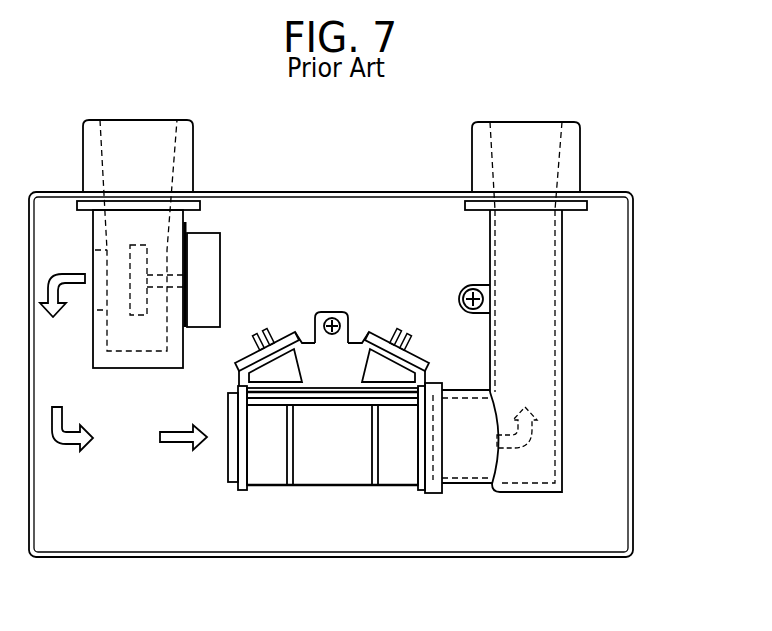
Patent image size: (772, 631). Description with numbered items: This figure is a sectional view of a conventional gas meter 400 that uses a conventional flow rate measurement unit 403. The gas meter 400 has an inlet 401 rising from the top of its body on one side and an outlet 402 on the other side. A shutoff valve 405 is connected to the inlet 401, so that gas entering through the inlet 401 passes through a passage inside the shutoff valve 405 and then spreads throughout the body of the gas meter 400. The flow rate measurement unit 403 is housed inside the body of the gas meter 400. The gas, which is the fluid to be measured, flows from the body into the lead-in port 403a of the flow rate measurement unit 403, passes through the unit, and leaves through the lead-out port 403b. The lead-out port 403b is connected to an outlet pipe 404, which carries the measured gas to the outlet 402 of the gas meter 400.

The gas meter 400 is at (665, 385).
The inlet 401 is at (182, 167).
The outlet 402 is at (570, 165).
The flow rate measurement unit 403 is at (325, 470).
The lead-in port 403a is at (228, 463).
The lead-out port 403b is at (432, 470).
The outlet pipe 404 is at (547, 368).
The shutoff valve 405 is at (203, 252).